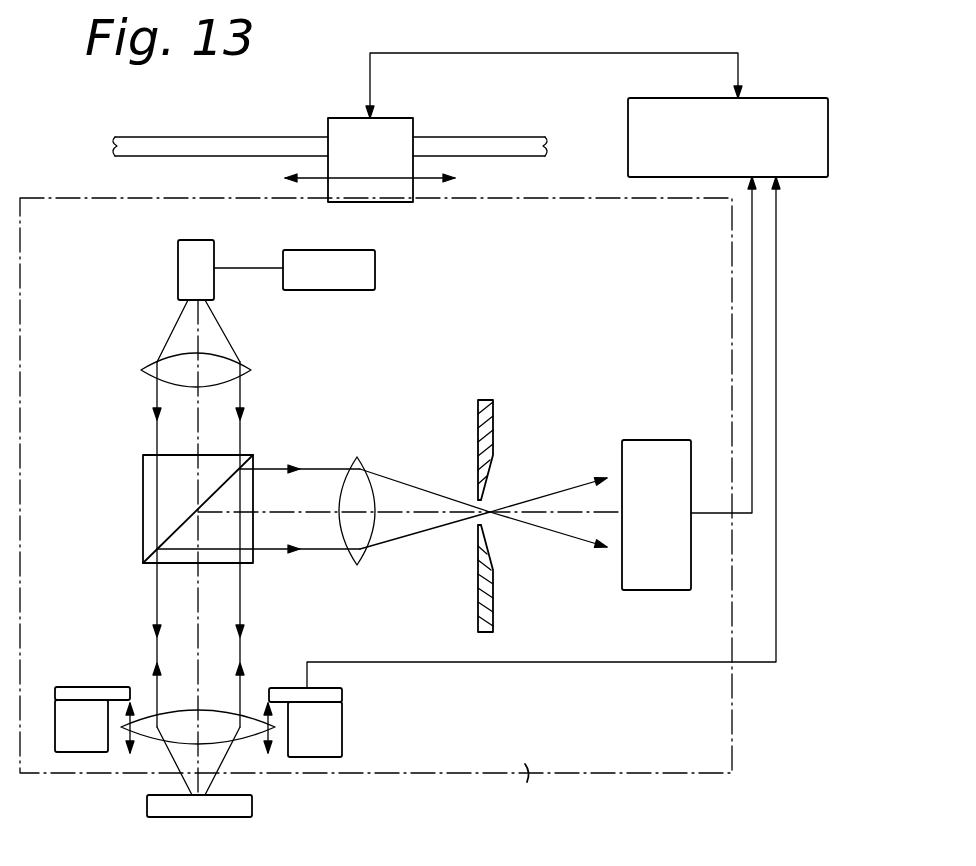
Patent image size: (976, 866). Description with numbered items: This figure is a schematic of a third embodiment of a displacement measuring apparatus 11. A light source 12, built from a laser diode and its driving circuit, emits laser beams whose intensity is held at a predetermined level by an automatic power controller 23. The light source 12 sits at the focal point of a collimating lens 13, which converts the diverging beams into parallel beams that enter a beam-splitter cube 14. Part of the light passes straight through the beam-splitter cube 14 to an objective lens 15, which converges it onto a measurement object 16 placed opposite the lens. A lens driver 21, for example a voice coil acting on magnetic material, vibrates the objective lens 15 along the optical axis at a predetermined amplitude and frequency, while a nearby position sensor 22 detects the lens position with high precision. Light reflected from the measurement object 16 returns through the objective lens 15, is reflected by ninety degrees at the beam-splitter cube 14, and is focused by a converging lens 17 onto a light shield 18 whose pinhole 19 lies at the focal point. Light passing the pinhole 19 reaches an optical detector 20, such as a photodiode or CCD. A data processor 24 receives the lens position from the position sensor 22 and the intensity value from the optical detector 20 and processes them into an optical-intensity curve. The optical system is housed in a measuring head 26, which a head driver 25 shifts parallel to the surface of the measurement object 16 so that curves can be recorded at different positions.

The displacement measuring apparatus 11 is at (596, 300).
The light source 12 is at (190, 268).
The collimating lens 13 is at (172, 364).
The beam-splitter cube 14 is at (143, 497).
The objective lens 15 is at (172, 732).
The measurement object 16 is at (250, 806).
The converging lens 17 is at (360, 540).
The light shield 18 is at (490, 420).
The pinhole 19 is at (478, 525).
The optical detector 20 is at (657, 455).
The lens driver 21 is at (325, 722).
The position sensor 22 is at (342, 695).
The automatic power controller 23 is at (372, 289).
The data processor 24 is at (809, 106).
The head driver 25 is at (398, 132).
The measuring head 26 is at (532, 790).